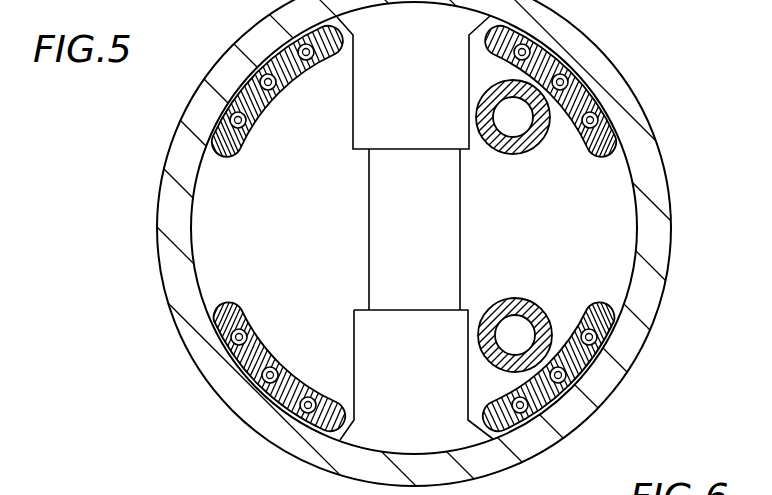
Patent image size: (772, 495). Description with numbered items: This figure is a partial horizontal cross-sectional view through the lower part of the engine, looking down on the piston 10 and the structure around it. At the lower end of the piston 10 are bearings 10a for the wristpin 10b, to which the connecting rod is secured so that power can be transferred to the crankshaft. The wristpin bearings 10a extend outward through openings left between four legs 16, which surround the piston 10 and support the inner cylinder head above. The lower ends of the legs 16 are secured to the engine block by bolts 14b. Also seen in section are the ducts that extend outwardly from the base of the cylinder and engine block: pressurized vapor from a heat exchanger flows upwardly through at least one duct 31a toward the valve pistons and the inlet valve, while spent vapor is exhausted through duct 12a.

The piston 10 is at (668, 172).
The bearings 10a is at (352, 113).
The wristpin 10b is at (369, 190).
The duct 12a is at (504, 222).
The bolts 14b is at (276, 102).
The legs 16 is at (363, 228).
The duct 31a is at (481, 99).